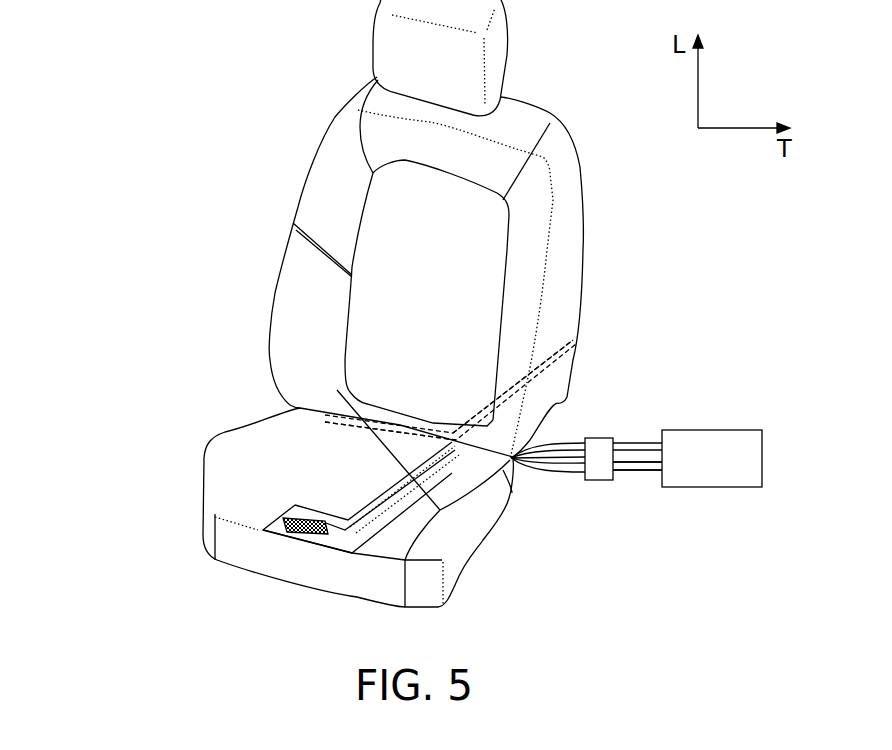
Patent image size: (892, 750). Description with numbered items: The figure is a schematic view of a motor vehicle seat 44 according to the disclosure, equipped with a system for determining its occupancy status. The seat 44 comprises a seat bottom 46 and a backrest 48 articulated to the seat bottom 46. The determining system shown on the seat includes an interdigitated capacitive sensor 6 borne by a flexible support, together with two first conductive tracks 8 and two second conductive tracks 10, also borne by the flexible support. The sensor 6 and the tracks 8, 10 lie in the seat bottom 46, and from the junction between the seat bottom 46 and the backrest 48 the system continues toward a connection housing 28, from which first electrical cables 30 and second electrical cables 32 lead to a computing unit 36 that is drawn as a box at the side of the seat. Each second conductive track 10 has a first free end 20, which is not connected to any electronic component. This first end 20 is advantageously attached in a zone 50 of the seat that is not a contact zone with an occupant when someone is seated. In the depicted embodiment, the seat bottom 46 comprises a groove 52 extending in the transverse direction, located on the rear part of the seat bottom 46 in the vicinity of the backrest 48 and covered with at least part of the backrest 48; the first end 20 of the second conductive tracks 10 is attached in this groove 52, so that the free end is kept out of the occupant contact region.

The interdigitated capacitive sensor 6 is at (280, 534).
The first conductive tracks 8 is at (392, 476).
The second conductive tracks 10 is at (573, 340).
The first free end 20 is at (503, 470).
The connection housing 28 is at (598, 465).
The first electrical cables 30 is at (643, 467).
The second electrical cables 32 is at (643, 448).
The computing unit 36 is at (713, 467).
The seat 44 is at (170, 559).
The seat bottom 46 is at (450, 553).
The backrest 48 is at (568, 260).
The zone 50 is at (350, 400).
The groove 52 is at (390, 431).